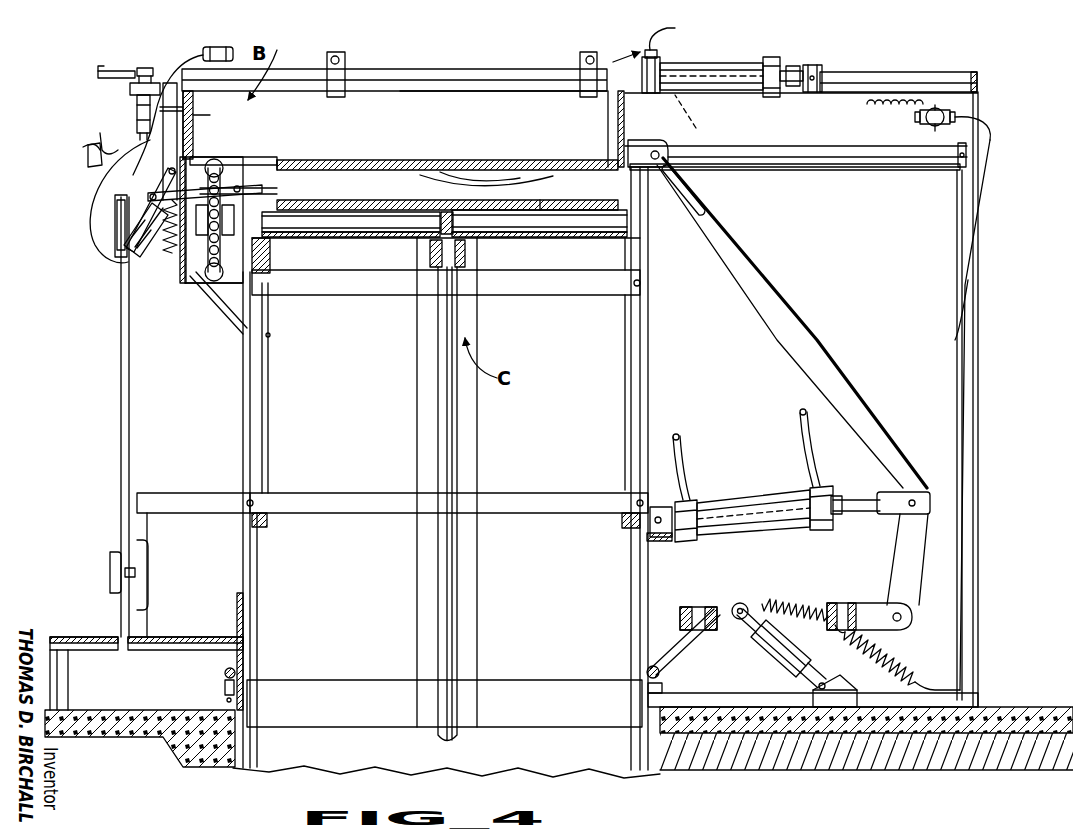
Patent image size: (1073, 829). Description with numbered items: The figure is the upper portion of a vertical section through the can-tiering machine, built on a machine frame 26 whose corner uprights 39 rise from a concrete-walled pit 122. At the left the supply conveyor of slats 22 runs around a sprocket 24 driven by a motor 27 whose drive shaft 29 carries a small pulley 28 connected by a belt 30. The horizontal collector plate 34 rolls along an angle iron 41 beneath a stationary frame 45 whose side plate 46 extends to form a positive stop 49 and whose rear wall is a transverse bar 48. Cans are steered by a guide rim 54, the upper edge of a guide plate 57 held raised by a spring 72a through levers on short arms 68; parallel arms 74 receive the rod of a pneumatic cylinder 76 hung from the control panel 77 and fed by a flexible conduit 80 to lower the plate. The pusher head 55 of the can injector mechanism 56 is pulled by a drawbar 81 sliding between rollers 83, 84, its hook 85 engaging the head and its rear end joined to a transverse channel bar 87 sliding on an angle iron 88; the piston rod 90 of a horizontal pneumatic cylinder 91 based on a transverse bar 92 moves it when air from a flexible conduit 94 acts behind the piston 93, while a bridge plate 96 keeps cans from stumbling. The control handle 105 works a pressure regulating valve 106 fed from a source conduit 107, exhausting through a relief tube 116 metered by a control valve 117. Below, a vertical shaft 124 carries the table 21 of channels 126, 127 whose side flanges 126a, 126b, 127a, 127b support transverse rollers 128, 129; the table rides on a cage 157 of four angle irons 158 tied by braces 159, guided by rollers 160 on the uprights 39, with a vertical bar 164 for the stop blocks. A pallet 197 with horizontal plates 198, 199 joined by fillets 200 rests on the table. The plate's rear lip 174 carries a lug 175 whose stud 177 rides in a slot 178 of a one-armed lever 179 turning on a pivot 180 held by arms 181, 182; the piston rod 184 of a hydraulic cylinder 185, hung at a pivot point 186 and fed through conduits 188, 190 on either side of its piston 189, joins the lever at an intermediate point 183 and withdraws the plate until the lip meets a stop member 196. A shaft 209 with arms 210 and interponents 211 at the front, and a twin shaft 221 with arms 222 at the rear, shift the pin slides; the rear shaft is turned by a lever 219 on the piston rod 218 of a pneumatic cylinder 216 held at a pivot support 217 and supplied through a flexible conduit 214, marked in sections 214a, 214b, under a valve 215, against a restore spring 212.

The table 21 is at (385, 248).
The slats 22 is at (200, 158).
The sprocket 24 is at (185, 272).
The machine frame 26 is at (752, 165).
The motor 27 is at (140, 595).
The small pulley 28 is at (113, 563).
The drive shaft 29 is at (110, 573).
The belt 30 is at (120, 517).
The collector plate 34 is at (497, 160).
The uprights 39 is at (243, 352).
The angle iron 41 is at (768, 166).
The stationary frame 45 is at (376, 118).
The side plate 46 is at (526, 122).
The transverse bar 48 is at (617, 140).
The positive stop 49 is at (212, 116).
The guide rim 54 is at (208, 157).
The pusher head 55 is at (88, 150).
The can injector mechanism 56 is at (672, 38).
The guide plate 57 is at (264, 189).
The short arm 68 is at (192, 168).
The spring 72a is at (125, 290).
The parallel arms 74 is at (148, 168).
The pneumatic cylinder 76 is at (110, 270).
The control panel 77 is at (126, 200).
The flexible conduit 80 is at (98, 252).
The drawbar 81 is at (520, 78).
The roller 83 is at (337, 52).
The roller 84 is at (340, 85).
The hook 85 is at (160, 108).
The transverse channel bar 87 is at (810, 66).
The angle iron 88 is at (908, 78).
The piston rod 90 is at (797, 74).
The pneumatic cylinder 91 is at (733, 84).
The transverse bar 92 is at (620, 94).
The piston 93 is at (739, 107).
The flexible conduit 94 is at (242, 50).
The bridge plate 96 is at (283, 163).
The control handle 105 is at (110, 70).
The pressure regulating valve 106 is at (129, 89).
The conduit 107 is at (100, 133).
The flexible tube 116 is at (112, 207).
The control valve 117 is at (112, 226).
The pit 122 is at (233, 768).
The vertical shaft 124 is at (445, 386).
The channel 126 is at (428, 252).
The side flange 126a is at (272, 222).
The side flange 126b is at (440, 255).
The channel 127 is at (522, 270).
The side flange 127a is at (482, 272).
The side flange 127b is at (627, 230).
The transverse rollers 128 is at (410, 222).
The transverse rollers 129 is at (552, 230).
The cage 157 is at (573, 505).
The vertical angle irons 158 is at (262, 405).
The braces 159 is at (603, 280).
The rollers 160 is at (641, 284).
The vertical bar 164 is at (418, 563).
The lip 174 is at (617, 117).
The lug 175 is at (735, 141).
The stud 177 is at (698, 175).
The elongated slot 178 is at (708, 207).
The one-armed lever 179 is at (773, 302).
The pivot 180 is at (910, 613).
The arm 181 is at (718, 605).
The arm 182 is at (684, 606).
The intermediate point 183 is at (915, 500).
The piston rod 184 is at (860, 508).
The hydraulic cylinder 185 is at (790, 528).
The pivot point 186 is at (650, 525).
The conduit 188 is at (678, 440).
The piston 189 is at (722, 524).
The conduit 190 is at (800, 425).
The stop member 196 is at (958, 157).
The pallet 197 is at (415, 205).
The horizontal plate 198 is at (470, 168).
The horizontal plate 199 is at (553, 202).
The fillets 200 is at (556, 148).
The transverse horizontal shaft 209 is at (224, 672).
The arm 210 is at (224, 688).
The interponent 211 is at (226, 700).
The restore spring 212 is at (798, 606).
The flexible conduit 214 is at (968, 284).
The valve 214a is at (915, 120).
The cable bend 214b is at (953, 322).
The valve 215 is at (950, 136).
The pneumatic cylinder 216 is at (793, 668).
The pivot support 217 is at (827, 685).
The piston rod 218 is at (778, 655).
The lever 219 is at (677, 647).
The transverse horizontal shaft 221 is at (646, 669).
The arm 222 is at (647, 689).